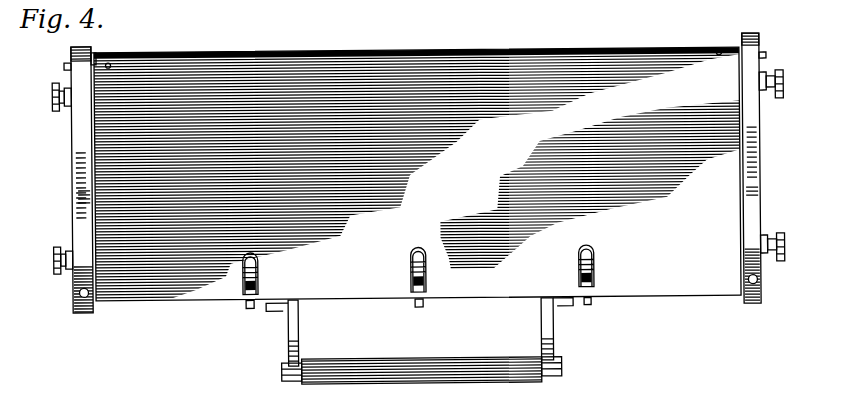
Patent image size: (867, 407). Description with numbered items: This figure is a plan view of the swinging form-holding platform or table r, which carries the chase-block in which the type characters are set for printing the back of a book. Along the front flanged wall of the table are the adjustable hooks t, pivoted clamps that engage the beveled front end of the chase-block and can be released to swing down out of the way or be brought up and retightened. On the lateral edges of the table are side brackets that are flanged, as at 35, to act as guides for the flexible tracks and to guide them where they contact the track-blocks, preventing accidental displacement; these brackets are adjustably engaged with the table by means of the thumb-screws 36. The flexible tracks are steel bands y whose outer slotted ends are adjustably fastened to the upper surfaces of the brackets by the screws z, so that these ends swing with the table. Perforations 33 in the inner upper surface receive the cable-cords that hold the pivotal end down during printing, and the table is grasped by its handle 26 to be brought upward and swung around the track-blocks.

The handle 26 is at (420, 341).
The perforations 33 is at (111, 60).
The flange 35 is at (97, 264).
The thumb-screw 36 is at (53, 98).
The steel bands y is at (80, 190).
The screws z is at (80, 318).
The adjustable hooks t is at (257, 283).
The form-holding platform or table r is at (417, 174).